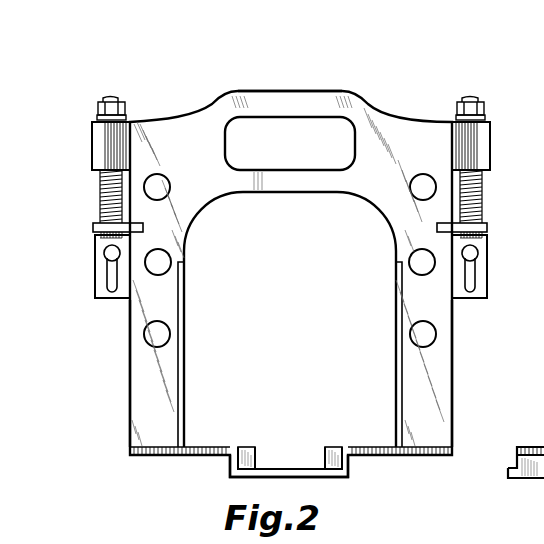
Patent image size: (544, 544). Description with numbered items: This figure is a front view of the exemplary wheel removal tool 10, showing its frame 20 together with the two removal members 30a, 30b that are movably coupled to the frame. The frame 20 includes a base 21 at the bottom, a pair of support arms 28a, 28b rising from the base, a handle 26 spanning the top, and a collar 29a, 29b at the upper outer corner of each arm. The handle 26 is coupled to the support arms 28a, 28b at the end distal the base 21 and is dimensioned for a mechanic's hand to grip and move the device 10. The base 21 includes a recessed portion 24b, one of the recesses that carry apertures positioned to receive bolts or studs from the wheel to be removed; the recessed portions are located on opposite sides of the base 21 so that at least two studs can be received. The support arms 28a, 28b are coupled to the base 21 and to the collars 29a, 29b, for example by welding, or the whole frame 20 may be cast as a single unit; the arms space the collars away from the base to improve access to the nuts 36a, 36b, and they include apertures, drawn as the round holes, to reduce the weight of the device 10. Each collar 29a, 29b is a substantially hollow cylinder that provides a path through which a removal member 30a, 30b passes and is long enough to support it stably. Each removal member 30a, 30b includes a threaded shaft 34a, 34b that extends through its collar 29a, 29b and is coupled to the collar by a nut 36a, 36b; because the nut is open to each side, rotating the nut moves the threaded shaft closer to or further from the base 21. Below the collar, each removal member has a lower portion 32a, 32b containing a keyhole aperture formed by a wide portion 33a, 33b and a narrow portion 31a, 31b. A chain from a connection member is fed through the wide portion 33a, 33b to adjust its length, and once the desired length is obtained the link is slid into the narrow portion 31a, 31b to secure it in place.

The wheel removal tool 10 is at (238, 67).
The frame 20 is at (373, 110).
The base 21 is at (361, 458).
The recessed portion 24b is at (287, 468).
The handle 26 is at (291, 92).
The support arm 28a is at (446, 370).
The support arm 28b is at (135, 370).
The collar 29a is at (490, 145).
The collar 29b is at (92, 145).
The removal member 30a is at (487, 228).
The removal member 30b is at (93, 228).
The narrow portion 31a is at (472, 288).
The narrow portion 31b is at (110, 287).
The lower portion 32a is at (487, 270).
The lower portion 32b is at (95, 270).
The wide portion 33a is at (476, 253).
The wide portion 33b is at (108, 253).
The threaded shaft 34a is at (482, 193).
The threaded shaft 34b is at (100, 192).
The nut 36a is at (485, 110).
The nut 36b is at (97, 110).